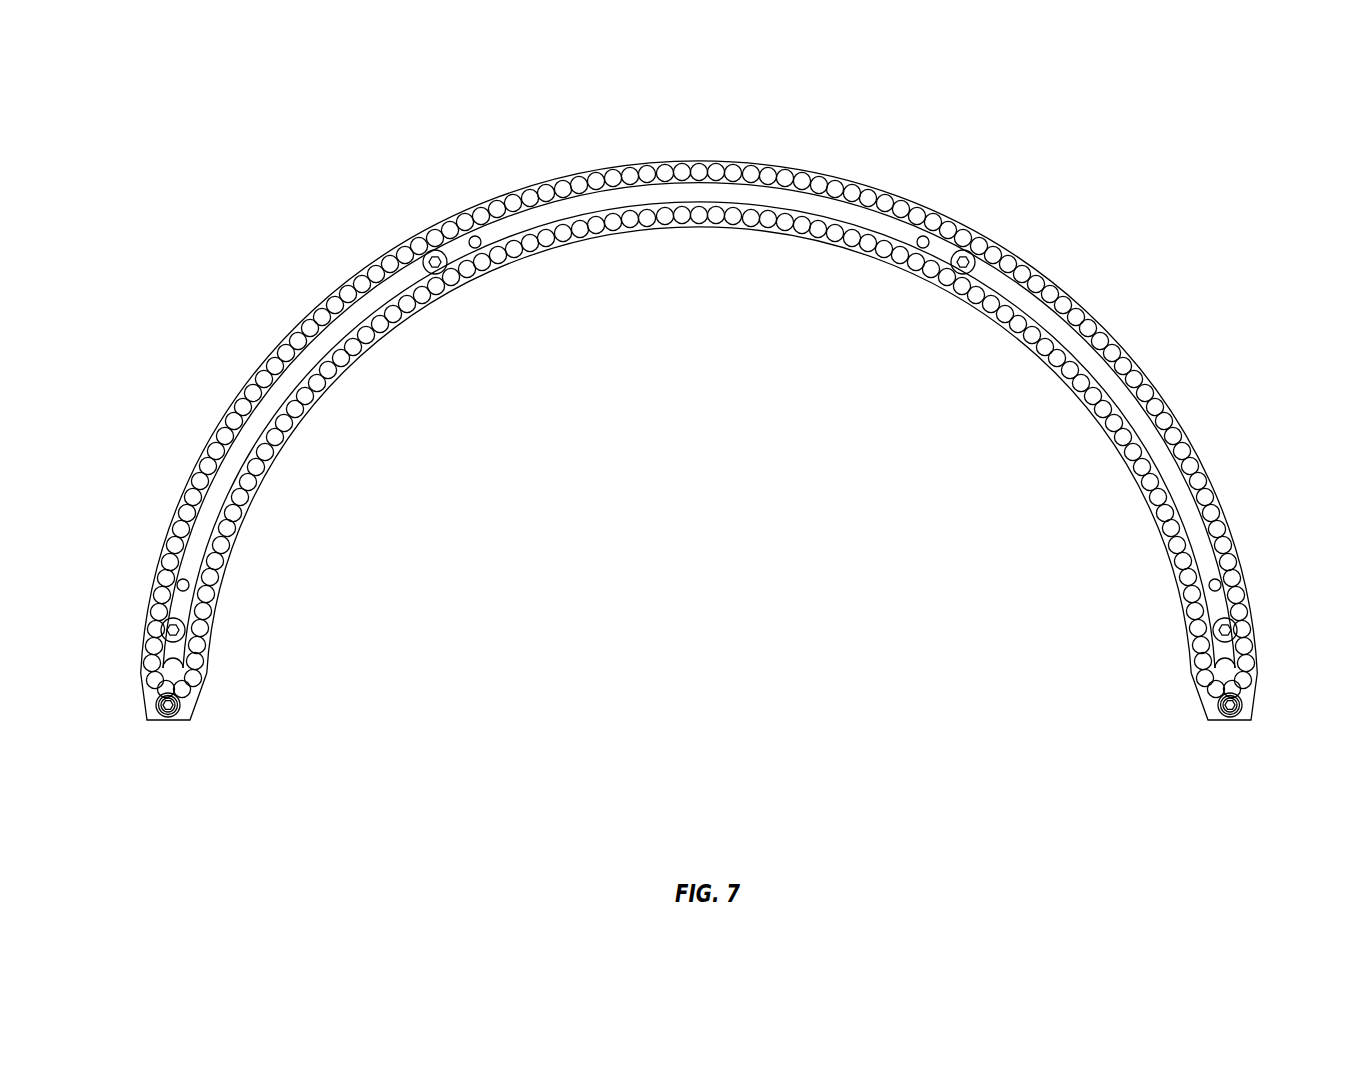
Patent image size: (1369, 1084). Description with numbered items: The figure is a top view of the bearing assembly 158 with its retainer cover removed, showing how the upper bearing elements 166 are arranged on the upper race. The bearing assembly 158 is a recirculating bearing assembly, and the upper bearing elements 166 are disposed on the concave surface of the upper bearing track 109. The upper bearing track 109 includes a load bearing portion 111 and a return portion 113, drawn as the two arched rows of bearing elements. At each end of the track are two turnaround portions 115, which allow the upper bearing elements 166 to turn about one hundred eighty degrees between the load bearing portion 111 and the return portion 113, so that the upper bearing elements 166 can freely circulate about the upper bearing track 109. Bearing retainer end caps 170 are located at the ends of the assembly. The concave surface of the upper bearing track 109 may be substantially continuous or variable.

The bearing assembly 158 is at (603, 128).
The upper bearing track 109 is at (230, 565).
The return portion 113 is at (790, 167).
The load bearing portion 111 is at (875, 252).
The upper bearing elements 166 is at (1025, 278).
The turnaround portions 115 is at (155, 690).
The bearing retainer end caps 170 is at (168, 722).